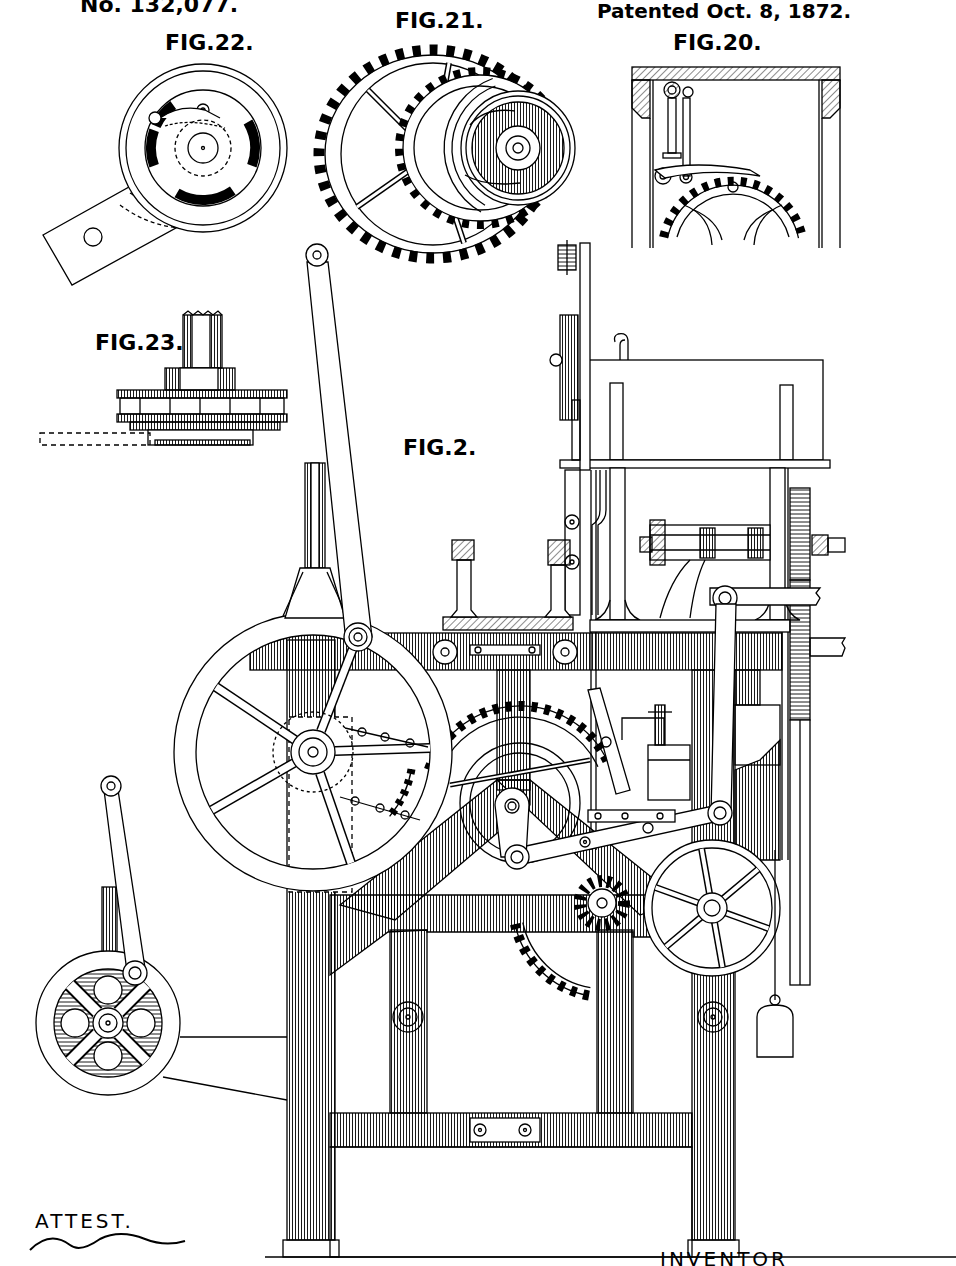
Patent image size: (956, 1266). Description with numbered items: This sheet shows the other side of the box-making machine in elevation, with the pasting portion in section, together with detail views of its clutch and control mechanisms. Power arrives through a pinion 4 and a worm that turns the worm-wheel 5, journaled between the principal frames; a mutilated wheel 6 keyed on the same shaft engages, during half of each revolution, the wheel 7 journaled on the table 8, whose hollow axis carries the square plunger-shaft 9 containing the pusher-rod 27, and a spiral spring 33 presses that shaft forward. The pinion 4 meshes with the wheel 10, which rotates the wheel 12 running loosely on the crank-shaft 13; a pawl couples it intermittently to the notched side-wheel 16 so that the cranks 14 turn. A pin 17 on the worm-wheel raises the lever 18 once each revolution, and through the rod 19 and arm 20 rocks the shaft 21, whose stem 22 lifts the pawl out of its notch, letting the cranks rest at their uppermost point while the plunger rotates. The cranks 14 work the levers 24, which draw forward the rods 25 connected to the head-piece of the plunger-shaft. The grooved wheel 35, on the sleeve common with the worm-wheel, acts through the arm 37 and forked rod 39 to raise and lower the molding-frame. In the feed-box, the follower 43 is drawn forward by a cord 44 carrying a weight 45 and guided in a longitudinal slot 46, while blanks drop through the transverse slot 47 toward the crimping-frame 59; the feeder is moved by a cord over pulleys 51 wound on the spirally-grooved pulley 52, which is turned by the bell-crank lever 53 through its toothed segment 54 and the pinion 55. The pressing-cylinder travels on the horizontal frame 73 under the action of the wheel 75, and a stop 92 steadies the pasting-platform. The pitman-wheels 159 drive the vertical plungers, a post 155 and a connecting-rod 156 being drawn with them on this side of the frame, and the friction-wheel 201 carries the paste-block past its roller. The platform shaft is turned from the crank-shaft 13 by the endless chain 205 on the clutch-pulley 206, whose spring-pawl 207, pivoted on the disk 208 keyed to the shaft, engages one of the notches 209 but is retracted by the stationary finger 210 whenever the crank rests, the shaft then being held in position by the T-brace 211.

In FIG. 2, the pinion 4 is at (712, 908).
In FIG. 21, the worm-wheel 5 is at (480, 148).
In FIG. 20, the worm-wheel 5 is at (733, 213).
In FIG. 21, the mutilated wheel 6 is at (433, 154).
In FIG. 2, the mutilated wheel 6 is at (817, 782).
In FIG. 2, the wheel 7 is at (805, 534).
In FIG. 20, the table 8 is at (736, 152).
In FIG. 2, the table 8 is at (695, 550).
In FIG. 2, the plunger-shaft 9 is at (710, 569).
In FIG. 2, the wheel 10 is at (569, 938).
In FIG. 2, the wheel 12 is at (518, 740).
In FIG. 22, the crank-shaft 13 is at (203, 148).
In FIG. 23, the crank-shaft 13 is at (202, 339).
In FIG. 2, the crank-shaft 13 is at (514, 806).
In FIG. 2, the crank 14 is at (512, 828).
In FIG. 2, the side-wheel 16 is at (520, 805).
In FIG. 20, the pin 17 is at (733, 192).
In FIG. 20, the lever 18 is at (707, 174).
In FIG. 20, the rod 19 is at (687, 140).
In FIG. 20, the arm 20 is at (693, 92).
In FIG. 20, the shaft 21 is at (666, 90).
In FIG. 20, the stem 22 is at (668, 128).
In FIG. 2, the lever 24 is at (722, 714).
In FIG. 2, the rod 25 is at (666, 726).
In FIG. 2, the pusher-rod 27 is at (740, 538).
In FIG. 2, the spiral spring 33 is at (631, 756).
In FIG. 21, the wheel 35 is at (509, 146).
In FIG. 2, the wheel 35 is at (669, 772).
In FIG. 2, the arm 37 is at (647, 723).
In FIG. 2, the forked rod 39 is at (620, 835).
In FIG. 2, the follower 43 is at (628, 347).
In FIG. 2, the cord 44 is at (695, 472).
In FIG. 2, the weight 45 is at (775, 953).
In FIG. 2, the longitudinal slot 46 is at (705, 410).
In FIG. 2, the transverse slot 47 is at (603, 852).
In FIG. 2, the pulley 51 is at (564, 255).
In FIG. 2, the spirally-grooved pulley 52 is at (562, 364).
In FIG. 2, the bell-crank lever 53 is at (594, 542).
In FIG. 2, the toothed segment 54 is at (566, 430).
In FIG. 2, the pinion 55 is at (600, 546).
In FIG. 2, the crimping-frame 59 is at (567, 542).
In FIG. 2, the horizontal frame 73 is at (554, 577).
In FIG. 2, the wheel 75 is at (508, 579).
In FIG. 2, the stop 92 is at (505, 654).
In FIG. 2, the post 155 is at (315, 540).
In FIG. 2, the connecting rod 156 is at (339, 443).
In FIG. 2, the pitman-wheel 159 is at (327, 635).
In FIG. 2, the friction-wheel 201 is at (313, 752).
In FIG. 2, the endless chain 205 is at (384, 775).
In FIG. 22, the clutch-pulley 206 is at (258, 72).
In FIG. 23, the clutch-pulley 206 is at (202, 395).
In FIG. 2, the clutch-pulley 206 is at (397, 773).
In FIG. 22, the spring-pawl 207 is at (187, 114).
In FIG. 23, the spring-pawl 207 is at (205, 431).
In FIG. 22, the disk 208 is at (203, 148).
In FIG. 23, the disk 208 is at (211, 437).
In FIG. 22, the notch 209 is at (105, 161).
In FIG. 22, the stationary finger 210 is at (129, 233).
In FIG. 23, the stationary finger 210 is at (95, 437).
In FIG. 2, the T-brace 211 is at (161, 993).